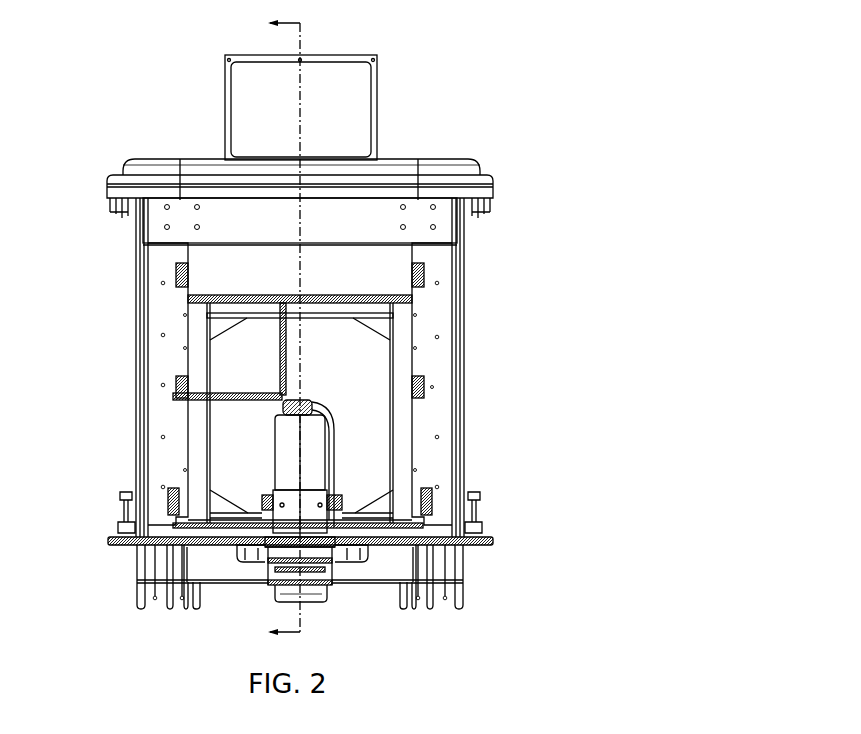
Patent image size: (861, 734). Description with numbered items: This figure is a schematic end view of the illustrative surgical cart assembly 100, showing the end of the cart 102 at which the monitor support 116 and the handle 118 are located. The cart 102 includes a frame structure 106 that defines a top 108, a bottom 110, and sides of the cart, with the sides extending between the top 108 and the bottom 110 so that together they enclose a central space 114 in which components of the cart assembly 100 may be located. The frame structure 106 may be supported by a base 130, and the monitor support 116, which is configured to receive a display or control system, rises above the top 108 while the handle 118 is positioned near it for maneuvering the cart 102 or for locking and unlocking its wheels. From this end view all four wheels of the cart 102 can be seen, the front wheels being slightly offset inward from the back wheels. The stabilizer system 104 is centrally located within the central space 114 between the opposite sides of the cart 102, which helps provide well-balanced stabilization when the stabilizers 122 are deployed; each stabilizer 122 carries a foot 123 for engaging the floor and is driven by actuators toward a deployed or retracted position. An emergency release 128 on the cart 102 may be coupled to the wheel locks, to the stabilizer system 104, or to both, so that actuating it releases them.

The cart assembly 100 is at (672, 88).
The cart 102 is at (100, 273).
The stabilizing system 104 is at (343, 433).
The frame structure 106 is at (464, 265).
The top 108 is at (462, 137).
The bottom 110 is at (353, 593).
The central space 114 is at (403, 457).
The monitor support 116 is at (228, 55).
The handle 118 is at (153, 165).
The stabilizer 122 is at (282, 430).
The foot 123 is at (308, 600).
The emergency release 128 is at (270, 583).
The base 130 is at (492, 540).